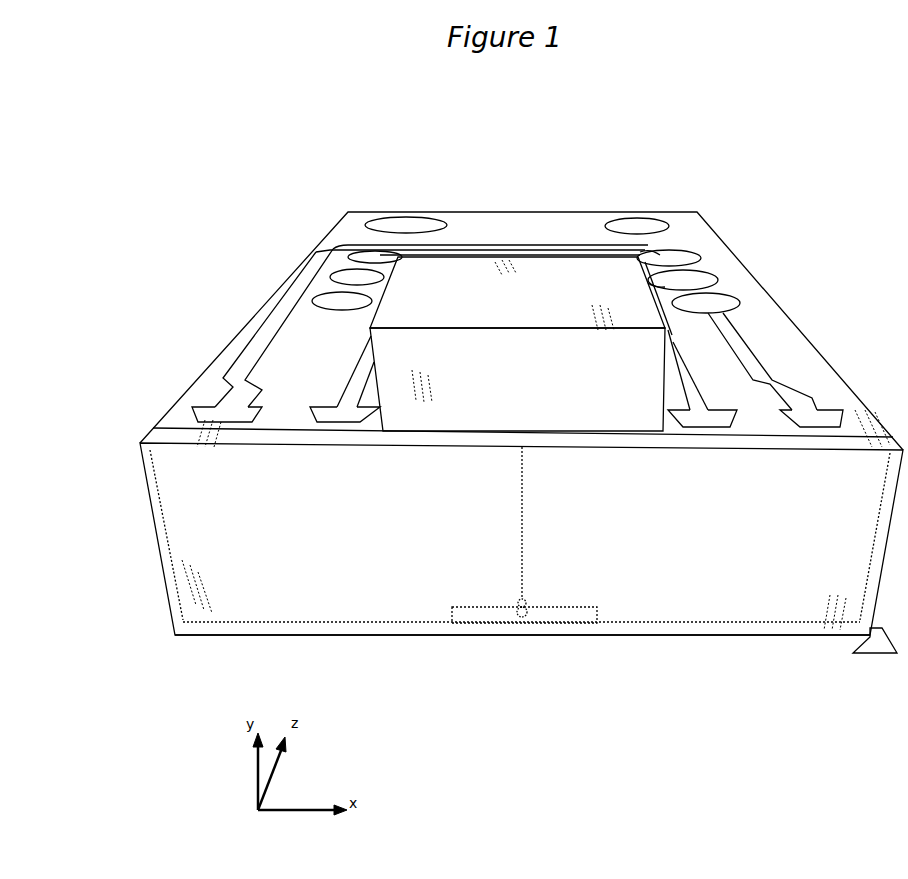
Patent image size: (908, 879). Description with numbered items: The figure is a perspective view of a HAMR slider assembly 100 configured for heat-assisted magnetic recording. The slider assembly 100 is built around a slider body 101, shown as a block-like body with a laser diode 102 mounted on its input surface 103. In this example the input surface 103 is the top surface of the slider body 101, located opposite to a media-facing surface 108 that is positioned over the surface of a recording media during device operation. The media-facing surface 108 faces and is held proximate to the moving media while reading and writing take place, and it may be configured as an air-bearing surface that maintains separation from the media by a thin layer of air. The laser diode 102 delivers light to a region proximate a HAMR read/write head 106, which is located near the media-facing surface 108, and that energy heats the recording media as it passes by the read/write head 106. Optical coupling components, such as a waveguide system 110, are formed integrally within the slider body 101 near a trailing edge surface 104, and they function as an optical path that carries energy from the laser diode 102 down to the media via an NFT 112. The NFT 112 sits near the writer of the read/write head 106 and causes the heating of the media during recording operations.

The HAMR slider assembly 100 is at (705, 160).
The slider body 101 is at (323, 240).
The laser diode 102 is at (478, 265).
The input surface 103 is at (203, 390).
The trailing edge surface 104 is at (237, 612).
The HAMR read/write head 106 is at (528, 623).
The media-facing surface 108 is at (890, 653).
The waveguide system 110 is at (523, 517).
The NFT 112 is at (518, 627).